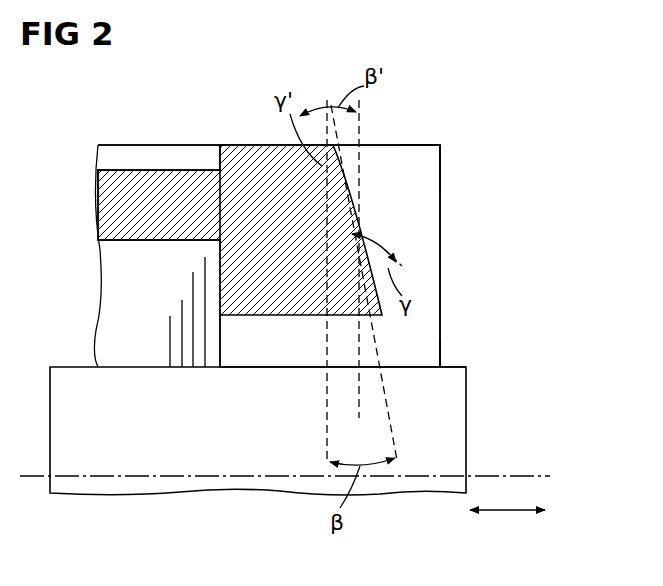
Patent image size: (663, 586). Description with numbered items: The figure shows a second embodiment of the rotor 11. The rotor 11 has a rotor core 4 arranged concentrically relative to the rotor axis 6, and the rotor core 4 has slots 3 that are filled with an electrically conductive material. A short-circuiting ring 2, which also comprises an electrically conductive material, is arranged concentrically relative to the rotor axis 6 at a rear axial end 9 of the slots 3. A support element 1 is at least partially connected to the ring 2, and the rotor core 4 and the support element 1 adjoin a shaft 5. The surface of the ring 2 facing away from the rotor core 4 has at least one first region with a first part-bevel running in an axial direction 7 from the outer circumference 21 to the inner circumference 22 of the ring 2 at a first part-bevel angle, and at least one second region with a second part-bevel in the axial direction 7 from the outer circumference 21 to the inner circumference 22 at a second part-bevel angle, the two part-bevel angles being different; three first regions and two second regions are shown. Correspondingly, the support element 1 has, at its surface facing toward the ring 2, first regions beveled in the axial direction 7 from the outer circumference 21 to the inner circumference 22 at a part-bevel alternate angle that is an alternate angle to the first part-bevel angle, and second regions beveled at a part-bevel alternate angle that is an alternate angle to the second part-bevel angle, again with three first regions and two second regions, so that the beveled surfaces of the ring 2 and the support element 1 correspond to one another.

The support element 1 is at (425, 158).
The short-circuiting ring 2 is at (237, 145).
The slots 3 is at (118, 204).
The rotor core 4 is at (118, 160).
The shaft 5 is at (158, 487).
The rotor axis 6 is at (545, 476).
The axial direction 7 is at (508, 512).
The rear axial end 9 is at (444, 117).
The rotor 11 is at (443, 243).
The outer circumference 21 is at (450, 140).
The inner circumference 22 is at (445, 363).